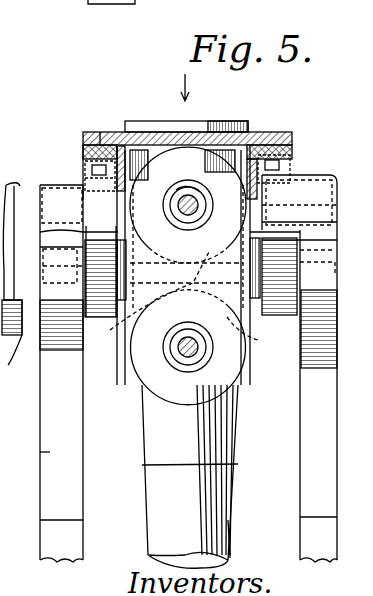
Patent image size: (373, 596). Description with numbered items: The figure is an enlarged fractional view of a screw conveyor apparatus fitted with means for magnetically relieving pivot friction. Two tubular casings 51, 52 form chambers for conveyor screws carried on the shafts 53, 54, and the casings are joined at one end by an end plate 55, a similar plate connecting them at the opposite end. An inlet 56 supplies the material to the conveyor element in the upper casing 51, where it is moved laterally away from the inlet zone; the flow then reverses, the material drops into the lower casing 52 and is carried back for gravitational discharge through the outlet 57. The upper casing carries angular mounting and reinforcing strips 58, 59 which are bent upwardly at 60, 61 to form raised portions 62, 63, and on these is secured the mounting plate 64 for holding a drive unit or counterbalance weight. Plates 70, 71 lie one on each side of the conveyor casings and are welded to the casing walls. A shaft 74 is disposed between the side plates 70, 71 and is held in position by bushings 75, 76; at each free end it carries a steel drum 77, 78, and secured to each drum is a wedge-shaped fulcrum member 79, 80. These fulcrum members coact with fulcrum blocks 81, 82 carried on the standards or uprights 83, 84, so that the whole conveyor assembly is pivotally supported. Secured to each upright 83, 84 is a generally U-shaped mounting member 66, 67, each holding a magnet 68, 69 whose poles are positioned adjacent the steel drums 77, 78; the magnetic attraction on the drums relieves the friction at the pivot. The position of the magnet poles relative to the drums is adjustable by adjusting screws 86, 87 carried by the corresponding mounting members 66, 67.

The tubular casing 51 is at (300, 225).
The tubular casing 52 is at (6, 290).
The shaft 53 is at (40, 170).
The shaft 54 is at (205, 352).
The end plate 55 is at (188, 195).
The inlet 56 is at (140, 121).
The outlet 57 is at (268, 450).
The angular mounting and reinforcing strip 58 is at (292, 170).
The angular mounting and reinforcing strip 59 is at (44, 189).
The upward bend 60 is at (292, 153).
The upward bend 61 is at (83, 152).
The raised portion 62 is at (292, 139).
The raised portion 63 is at (83, 144).
The mounting plate 64 is at (97, 131).
The U-shaped mounting member 66 is at (338, 184).
The U-shaped mounting member 67 is at (50, 204).
The magnet 68 is at (300, 210).
The magnet 69 is at (50, 233).
The side plate 70 is at (302, 284).
The side plate 71 is at (104, 317).
The shaft 74 is at (184, 295).
The bushing 75 is at (300, 240).
The bushing 76 is at (100, 292).
The steel drum 77 is at (267, 315).
The steel drum 78 is at (98, 320).
The wedge-shaped fulcrum member 79 is at (300, 252).
The wedge-shaped fulcrum member 80 is at (48, 256).
The fulcrum block 81 is at (335, 266).
The fulcrum block 82 is at (43, 268).
The upright 83 is at (252, 510).
The upright 84 is at (40, 452).
The adjusting screw 86 is at (85, 172).
The adjusting screw 87 is at (301, 371).